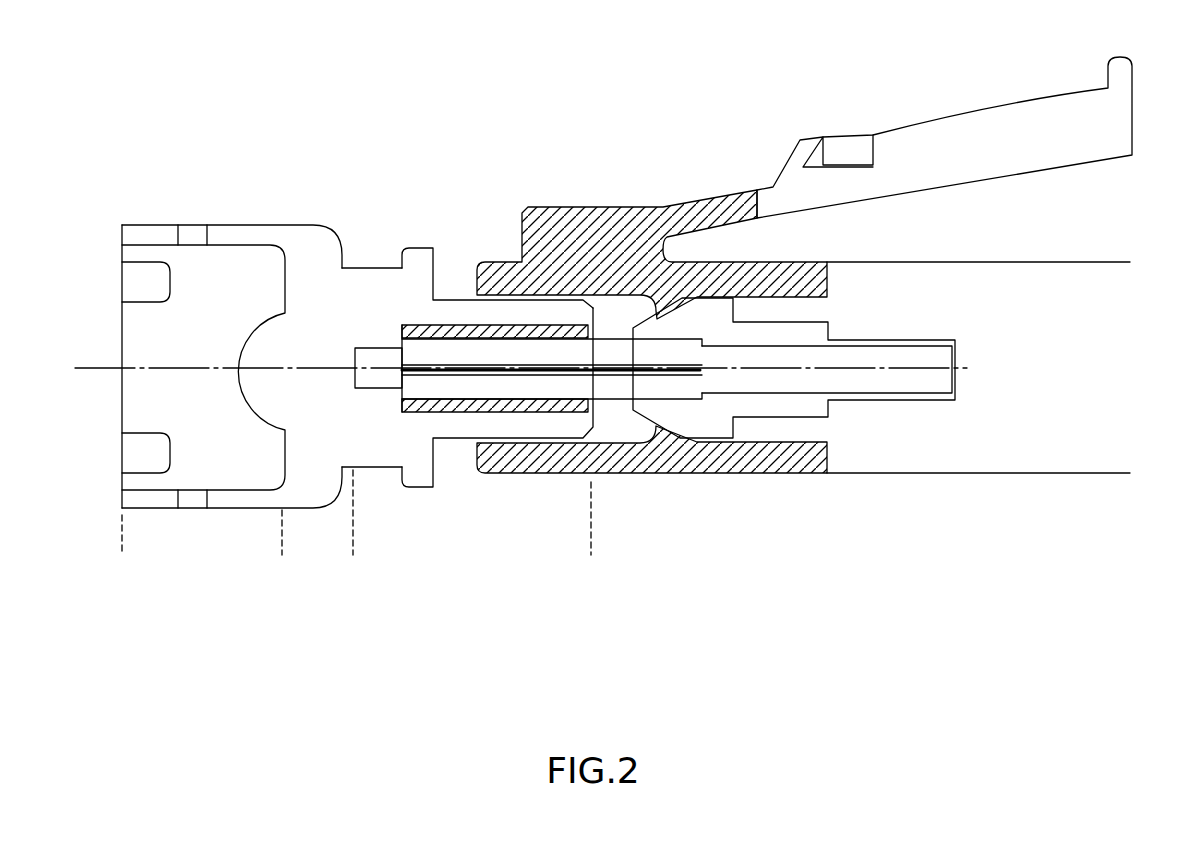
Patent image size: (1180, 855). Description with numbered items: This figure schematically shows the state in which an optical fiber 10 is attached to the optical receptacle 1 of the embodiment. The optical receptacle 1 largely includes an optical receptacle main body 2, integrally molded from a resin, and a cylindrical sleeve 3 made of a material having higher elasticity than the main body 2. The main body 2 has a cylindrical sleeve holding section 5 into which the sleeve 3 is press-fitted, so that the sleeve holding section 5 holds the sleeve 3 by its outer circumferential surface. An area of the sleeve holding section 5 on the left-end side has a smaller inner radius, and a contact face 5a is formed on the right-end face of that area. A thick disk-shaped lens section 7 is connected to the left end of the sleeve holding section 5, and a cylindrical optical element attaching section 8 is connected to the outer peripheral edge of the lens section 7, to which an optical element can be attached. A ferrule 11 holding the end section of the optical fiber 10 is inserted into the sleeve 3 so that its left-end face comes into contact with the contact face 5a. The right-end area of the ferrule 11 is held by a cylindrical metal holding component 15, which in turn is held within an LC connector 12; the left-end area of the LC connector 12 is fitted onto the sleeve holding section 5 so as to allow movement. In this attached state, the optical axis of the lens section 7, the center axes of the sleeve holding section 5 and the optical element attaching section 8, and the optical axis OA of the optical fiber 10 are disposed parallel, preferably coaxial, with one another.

The optical receptacle 1 is at (457, 183).
The optical receptacle main body 2 is at (373, 268).
The sleeve 3 is at (468, 325).
The sleeve holding section 5 is at (353, 555).
The contact face 5a is at (410, 327).
The lens section 7 is at (282, 555).
The optical element attaching section 8 is at (122, 555).
The optical fiber 10 is at (440, 372).
The ferrule 11 is at (608, 402).
The LC connector 12 is at (596, 207).
The metal holding component 15 is at (763, 420).
The optical axis OA is at (98, 370).